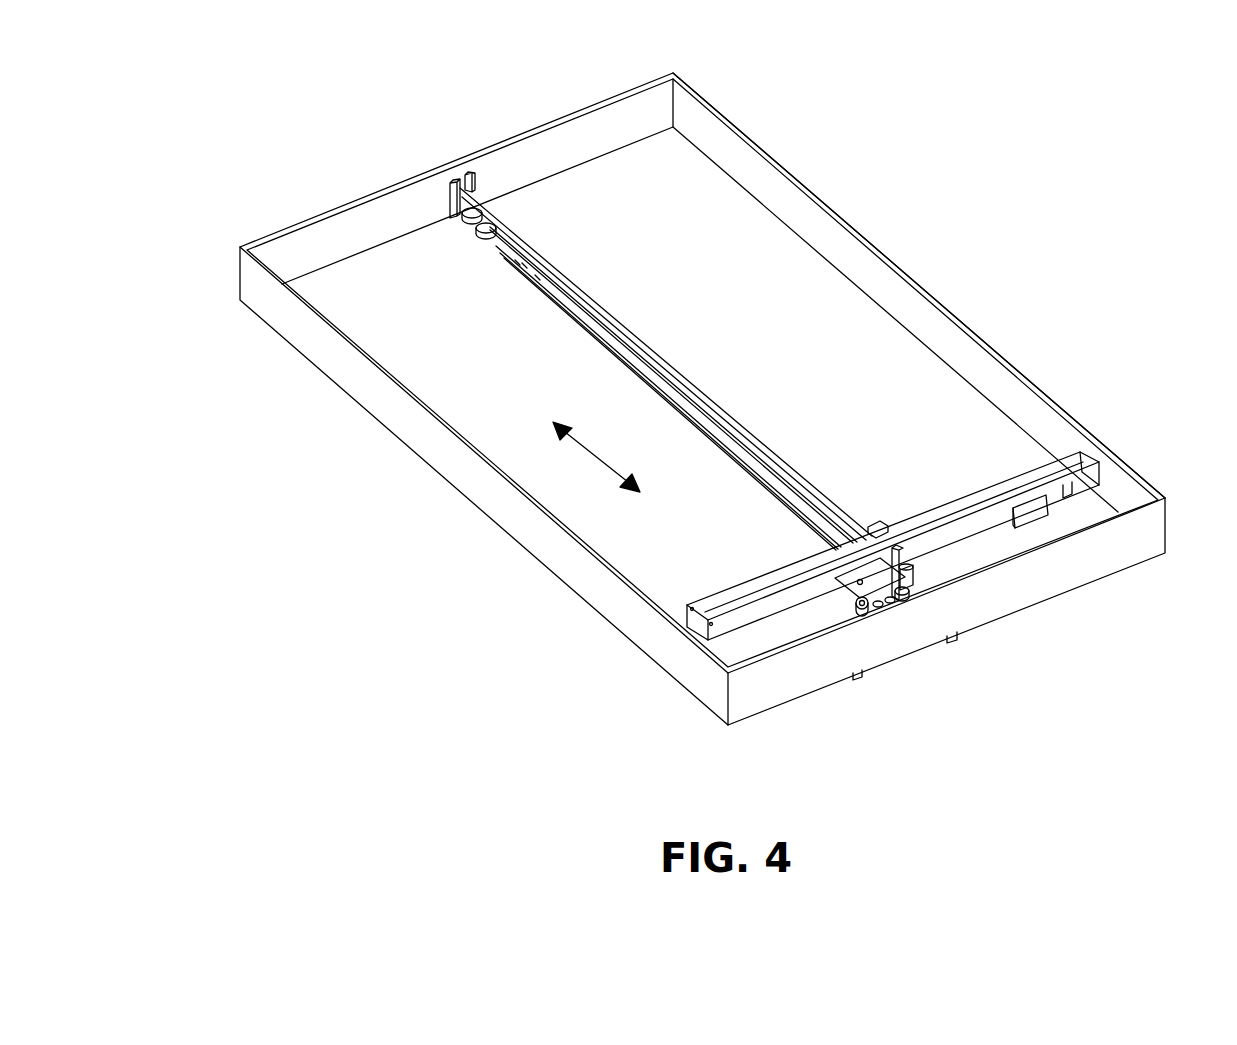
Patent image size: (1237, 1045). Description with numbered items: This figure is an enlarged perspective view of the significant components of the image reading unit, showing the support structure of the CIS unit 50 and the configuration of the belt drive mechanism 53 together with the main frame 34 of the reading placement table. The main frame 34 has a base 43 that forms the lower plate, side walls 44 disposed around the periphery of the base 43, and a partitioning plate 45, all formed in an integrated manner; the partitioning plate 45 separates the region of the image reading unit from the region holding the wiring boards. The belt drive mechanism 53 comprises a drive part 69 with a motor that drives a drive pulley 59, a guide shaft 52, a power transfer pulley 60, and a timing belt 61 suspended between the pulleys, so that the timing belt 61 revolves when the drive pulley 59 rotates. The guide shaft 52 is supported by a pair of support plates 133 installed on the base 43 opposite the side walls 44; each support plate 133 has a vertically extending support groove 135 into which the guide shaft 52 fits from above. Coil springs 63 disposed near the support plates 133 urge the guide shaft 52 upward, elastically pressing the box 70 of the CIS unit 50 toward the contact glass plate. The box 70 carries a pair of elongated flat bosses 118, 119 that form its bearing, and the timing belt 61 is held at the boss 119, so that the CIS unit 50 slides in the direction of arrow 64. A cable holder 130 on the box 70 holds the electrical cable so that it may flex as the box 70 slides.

The main frame 34 is at (750, 108).
The side walls 44 is at (556, 150).
The partitioning plate 45 is at (786, 165).
The base 43 is at (826, 315).
The support plates 133 is at (452, 210).
The support groove 135 is at (463, 190).
The guide shaft 52 is at (676, 380).
The timing belt 61 is at (592, 343).
The belt drive mechanism 53 is at (536, 312).
The coil spring 63 is at (471, 222).
The power transfer pulley 60 is at (484, 238).
The arrow 64 is at (595, 456).
The CIS unit 50 is at (974, 474).
The box 70 is at (935, 512).
The boss 119 is at (872, 522).
The boss 118 is at (908, 567).
The drive pulley 59 is at (903, 598).
The drive part 69 is at (836, 592).
The cable holder 130 is at (1028, 512).